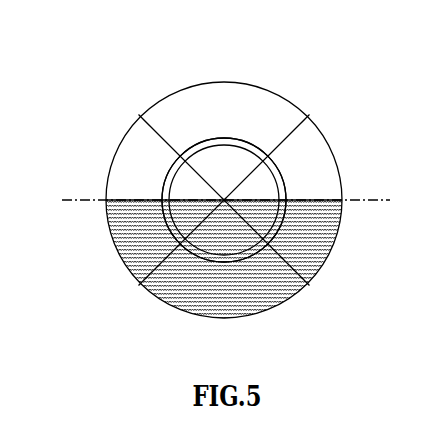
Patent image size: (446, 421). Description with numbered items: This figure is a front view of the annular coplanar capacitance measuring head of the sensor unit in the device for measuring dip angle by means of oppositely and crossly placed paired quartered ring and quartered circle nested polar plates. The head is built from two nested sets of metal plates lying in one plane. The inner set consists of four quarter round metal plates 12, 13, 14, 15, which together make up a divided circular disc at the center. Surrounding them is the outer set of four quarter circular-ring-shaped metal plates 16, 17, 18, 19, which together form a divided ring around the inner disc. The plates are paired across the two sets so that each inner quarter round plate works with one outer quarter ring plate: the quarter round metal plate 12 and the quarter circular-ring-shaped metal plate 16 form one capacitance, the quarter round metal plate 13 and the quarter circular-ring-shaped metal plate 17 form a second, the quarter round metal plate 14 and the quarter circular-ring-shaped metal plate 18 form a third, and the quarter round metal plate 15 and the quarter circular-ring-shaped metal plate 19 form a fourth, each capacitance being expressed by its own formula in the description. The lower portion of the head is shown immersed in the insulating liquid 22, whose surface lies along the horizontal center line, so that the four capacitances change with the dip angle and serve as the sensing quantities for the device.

The quarter round metal plate 12 is at (225, 168).
The quarter round metal plate 13 is at (190, 188).
The quarter round metal plate 14 is at (280, 283).
The quarter round metal plate 15 is at (262, 188).
The quarter circular-ring-shaped metal plate 16 is at (225, 108).
The quarter circular-ring-shaped metal plate 17 is at (143, 182).
The quarter circular-ring-shaped metal plate 18 is at (225, 285).
The quarter circular-ring-shaped metal plate 19 is at (308, 180).
The insulating liquid 22 is at (165, 230).